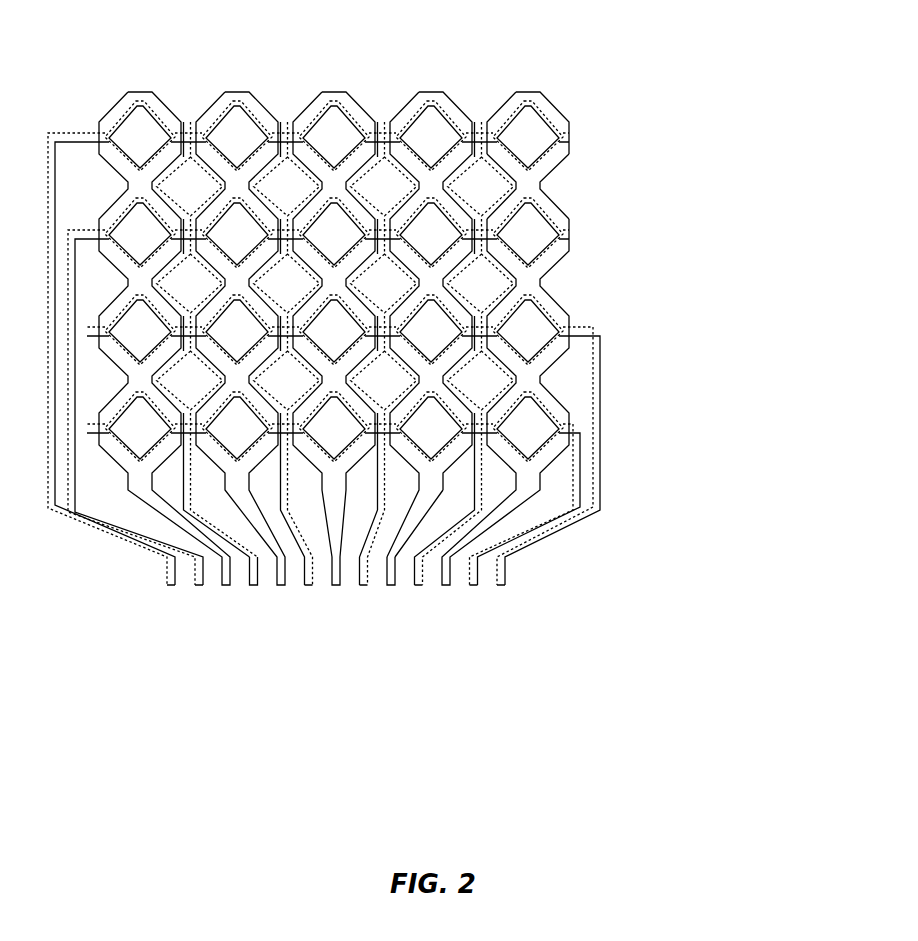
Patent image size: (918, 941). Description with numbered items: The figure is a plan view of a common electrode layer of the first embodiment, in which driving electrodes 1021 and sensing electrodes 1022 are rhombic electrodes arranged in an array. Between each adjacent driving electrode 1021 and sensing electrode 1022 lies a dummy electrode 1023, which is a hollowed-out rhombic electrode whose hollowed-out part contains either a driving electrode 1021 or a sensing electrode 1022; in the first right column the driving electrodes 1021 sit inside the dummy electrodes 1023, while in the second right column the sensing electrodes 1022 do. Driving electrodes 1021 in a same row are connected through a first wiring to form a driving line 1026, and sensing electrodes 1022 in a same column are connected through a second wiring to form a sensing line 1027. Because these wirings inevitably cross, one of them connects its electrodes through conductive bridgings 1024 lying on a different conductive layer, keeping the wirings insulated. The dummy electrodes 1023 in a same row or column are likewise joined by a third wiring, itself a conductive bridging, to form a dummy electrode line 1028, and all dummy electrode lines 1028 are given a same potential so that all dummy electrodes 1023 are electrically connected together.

The driving electrode 1021 is at (534, 130).
The sensing electrode 1022 is at (492, 284).
The dummy electrode 1023 is at (537, 189).
The conductive bridging 1024 is at (388, 122).
The driving line 1026 is at (613, 326).
The sensing line 1027 is at (261, 599).
The dummy electrode line 1028 is at (402, 597).